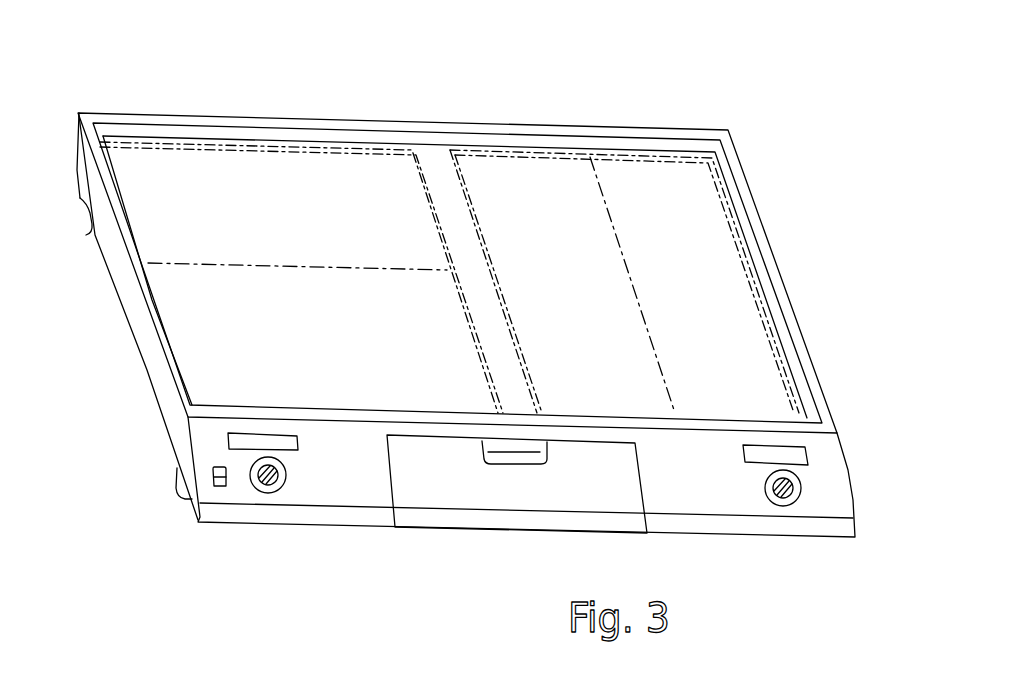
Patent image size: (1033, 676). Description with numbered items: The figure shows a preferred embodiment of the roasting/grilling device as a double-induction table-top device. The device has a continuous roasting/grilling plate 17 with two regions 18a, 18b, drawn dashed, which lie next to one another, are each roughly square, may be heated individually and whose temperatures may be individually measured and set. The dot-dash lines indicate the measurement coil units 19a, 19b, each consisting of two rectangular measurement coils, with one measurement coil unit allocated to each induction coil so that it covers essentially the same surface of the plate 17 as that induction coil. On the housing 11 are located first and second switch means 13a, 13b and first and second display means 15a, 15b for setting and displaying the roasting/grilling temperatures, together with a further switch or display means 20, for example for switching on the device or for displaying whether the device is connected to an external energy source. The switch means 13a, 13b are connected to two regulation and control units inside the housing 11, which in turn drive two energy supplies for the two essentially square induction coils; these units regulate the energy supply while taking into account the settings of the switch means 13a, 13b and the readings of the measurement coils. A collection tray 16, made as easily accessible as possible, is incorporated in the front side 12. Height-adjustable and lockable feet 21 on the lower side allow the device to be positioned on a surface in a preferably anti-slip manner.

The housing 11 is at (138, 327).
The front side 12 is at (333, 475).
The first switch means 13a is at (268, 493).
The second switch means 13b is at (785, 505).
The first display means 15a is at (240, 441).
The second display means 15b is at (800, 453).
The collection tray 16 is at (440, 485).
The roasting/grilling plate 17 is at (431, 165).
The first region of the roasting/grilling plate 18a is at (217, 143).
The second region of the roasting/grilling plate 18b is at (740, 227).
The first measurement coil unit 19a is at (325, 267).
The second measurement coil unit 19b is at (618, 232).
The further switch or display means 20 is at (220, 487).
The height-adjustable and lockable feet 21 is at (87, 234).